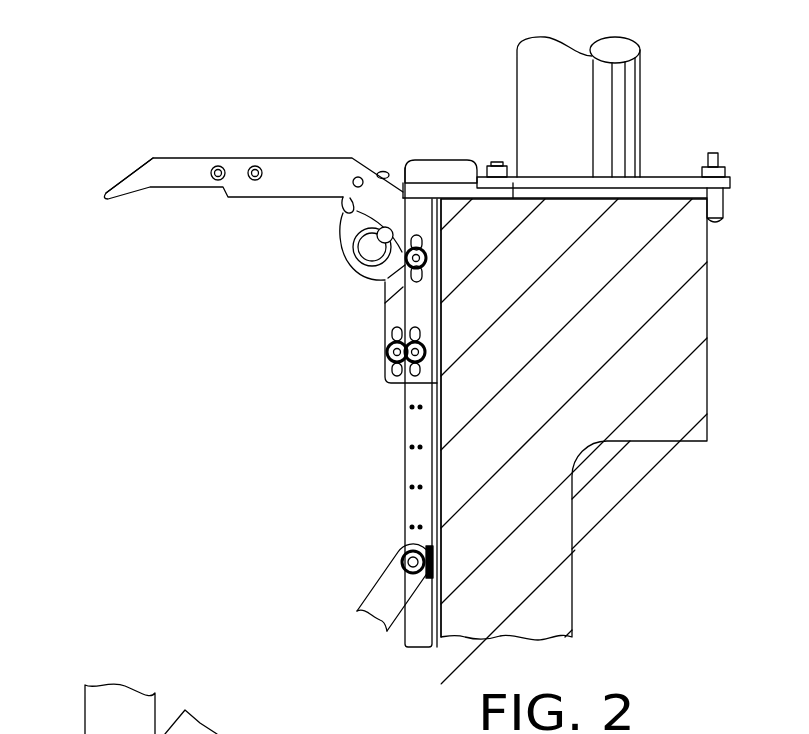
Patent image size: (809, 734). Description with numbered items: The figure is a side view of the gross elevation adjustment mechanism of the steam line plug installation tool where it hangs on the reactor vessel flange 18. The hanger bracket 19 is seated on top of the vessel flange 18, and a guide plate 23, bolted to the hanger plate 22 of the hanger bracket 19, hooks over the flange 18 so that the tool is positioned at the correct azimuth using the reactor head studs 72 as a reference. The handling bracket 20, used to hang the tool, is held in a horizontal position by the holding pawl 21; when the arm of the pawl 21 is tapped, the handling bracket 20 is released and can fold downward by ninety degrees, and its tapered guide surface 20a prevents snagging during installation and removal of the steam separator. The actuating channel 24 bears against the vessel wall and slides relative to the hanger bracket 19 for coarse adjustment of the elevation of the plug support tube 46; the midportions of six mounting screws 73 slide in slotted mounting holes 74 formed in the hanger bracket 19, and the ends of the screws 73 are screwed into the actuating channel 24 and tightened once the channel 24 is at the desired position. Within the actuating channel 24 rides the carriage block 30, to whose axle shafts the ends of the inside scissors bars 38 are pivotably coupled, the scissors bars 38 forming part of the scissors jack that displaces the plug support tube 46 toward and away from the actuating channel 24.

The reactor vessel flange 18 is at (683, 325).
The hanger bracket 19 is at (332, 301).
The handling bracket 20 is at (180, 173).
The tapered guide surface 20a is at (120, 180).
The holding pawl 21 is at (380, 172).
The hanger plate 22 is at (460, 188).
The guide plate 23 is at (670, 180).
The actuating channel 24 is at (410, 462).
The carriage block 30 is at (398, 545).
The inside scissors bar 38 is at (378, 597).
The reactor head stud 72 is at (530, 77).
The mounting screw 73 is at (378, 279).
The slotted mounting hole 74 is at (392, 335).
The plug support tube 46 is at (62, 733).